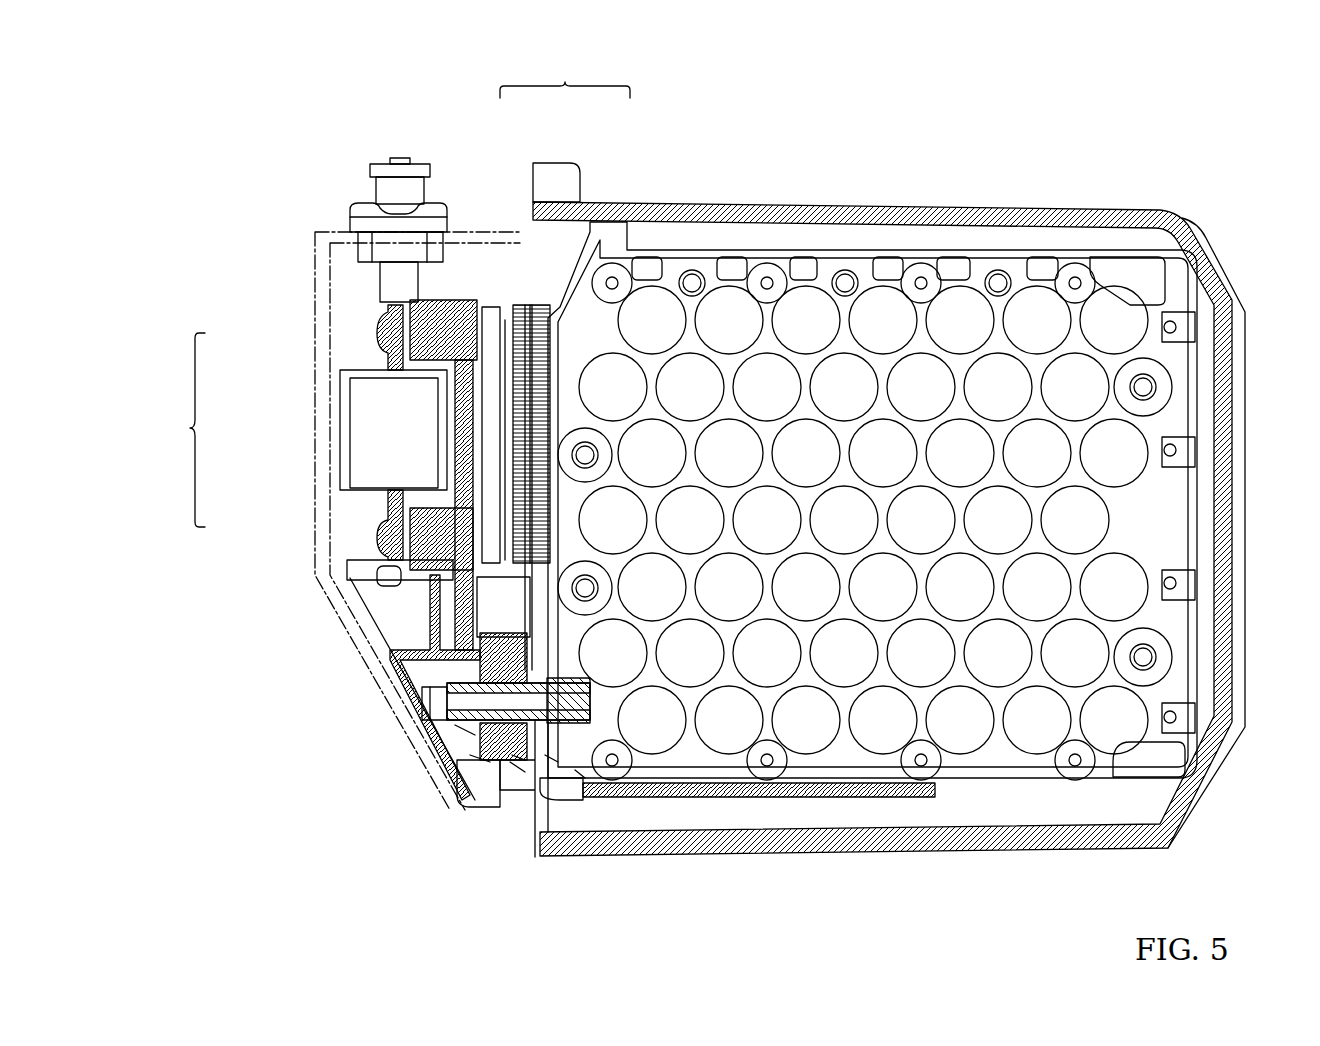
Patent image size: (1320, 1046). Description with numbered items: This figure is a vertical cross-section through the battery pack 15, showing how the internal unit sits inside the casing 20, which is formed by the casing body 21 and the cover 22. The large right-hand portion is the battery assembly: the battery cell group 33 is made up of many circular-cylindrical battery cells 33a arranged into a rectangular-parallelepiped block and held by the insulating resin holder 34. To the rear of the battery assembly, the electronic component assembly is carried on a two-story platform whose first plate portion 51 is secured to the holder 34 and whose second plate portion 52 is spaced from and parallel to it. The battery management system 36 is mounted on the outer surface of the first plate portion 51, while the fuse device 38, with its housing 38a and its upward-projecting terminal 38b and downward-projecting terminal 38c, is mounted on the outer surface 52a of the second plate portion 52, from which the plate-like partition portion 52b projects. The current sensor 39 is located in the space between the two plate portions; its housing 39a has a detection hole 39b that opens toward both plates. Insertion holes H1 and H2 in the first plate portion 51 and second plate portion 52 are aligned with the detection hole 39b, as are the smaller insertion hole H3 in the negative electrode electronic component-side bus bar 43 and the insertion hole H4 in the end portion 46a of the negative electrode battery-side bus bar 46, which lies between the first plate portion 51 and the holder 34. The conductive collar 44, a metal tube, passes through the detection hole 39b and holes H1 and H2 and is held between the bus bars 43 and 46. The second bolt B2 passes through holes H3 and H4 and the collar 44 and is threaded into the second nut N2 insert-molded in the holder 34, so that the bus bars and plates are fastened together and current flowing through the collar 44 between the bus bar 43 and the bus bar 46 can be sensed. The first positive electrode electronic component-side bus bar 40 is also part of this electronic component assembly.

The battery pack 15 is at (1162, 152).
The casing 20 is at (565, 73).
The casing body 21 is at (615, 200).
The cover 22 is at (516, 305).
The battery cell group 33 is at (990, 270).
The battery cell 33a is at (962, 308).
The holder 34 is at (850, 762).
The battery management system (BMS) 36 is at (500, 345).
The fuse device 38 is at (178, 430).
The housing 38a is at (345, 420).
The terminal 38b is at (390, 345).
The terminal 38c is at (395, 500).
The current sensor 39 is at (470, 690).
The housing 39a is at (425, 703).
The detection hole 39b is at (560, 725).
The first positive electrode electronic component-side bus bar 40 is at (435, 590).
The negative electrode electronic component-side bus bar 43 is at (500, 720).
The conductive collar 44 is at (480, 790).
The negative electrode battery-side bus bar 46 is at (660, 797).
The end portion 46a is at (548, 800).
The first plate portion 51 is at (500, 305).
The second plate portion 52 is at (462, 300).
The outer surface 52a is at (470, 600).
The partition portion 52b is at (350, 540).
The second bolt B2 is at (470, 730).
The insertion hole H1 is at (518, 760).
The insertion hole H2 is at (520, 770).
The insertion hole H3 is at (482, 760).
The insertion hole H4 is at (550, 762).
The second nut N2 is at (582, 777).